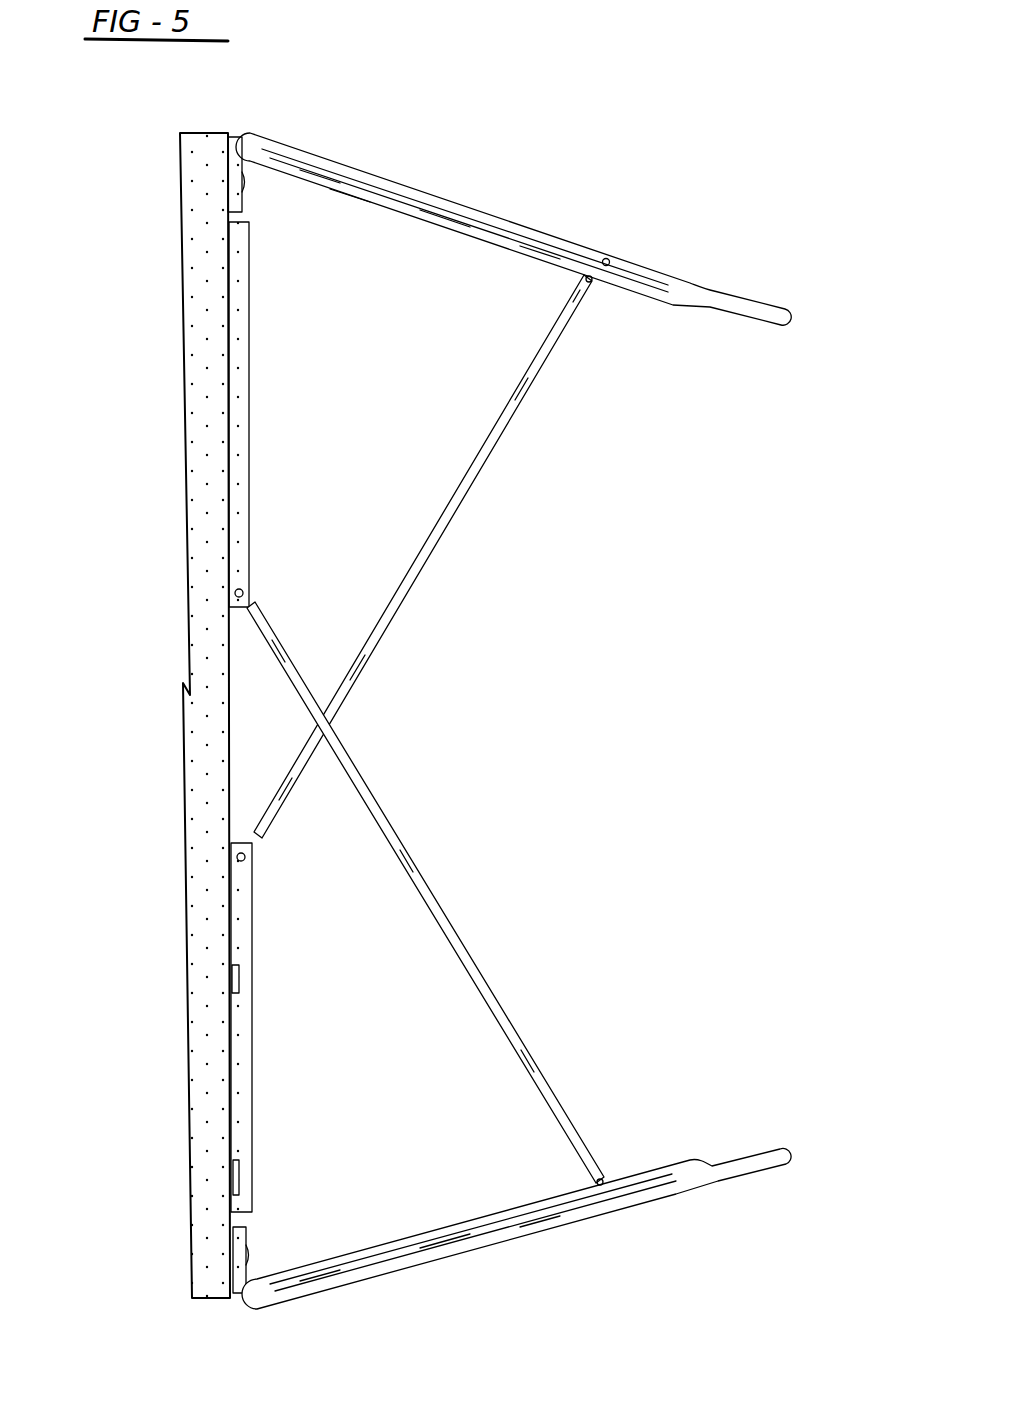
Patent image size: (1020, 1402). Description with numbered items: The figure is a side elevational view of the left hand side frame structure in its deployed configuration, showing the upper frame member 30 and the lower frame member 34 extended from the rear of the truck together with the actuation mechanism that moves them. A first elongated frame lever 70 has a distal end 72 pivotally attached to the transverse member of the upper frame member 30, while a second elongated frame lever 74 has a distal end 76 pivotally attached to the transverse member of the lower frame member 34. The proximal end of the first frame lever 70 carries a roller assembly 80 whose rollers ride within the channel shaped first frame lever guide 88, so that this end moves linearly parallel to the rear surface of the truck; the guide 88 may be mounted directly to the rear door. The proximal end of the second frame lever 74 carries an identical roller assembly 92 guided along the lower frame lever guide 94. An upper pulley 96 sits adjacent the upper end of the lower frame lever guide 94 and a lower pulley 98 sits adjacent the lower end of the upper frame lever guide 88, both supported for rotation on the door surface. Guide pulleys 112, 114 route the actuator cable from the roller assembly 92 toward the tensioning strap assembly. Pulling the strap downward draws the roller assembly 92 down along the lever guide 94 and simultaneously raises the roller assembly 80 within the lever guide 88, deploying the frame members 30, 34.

The upper frame member 30 is at (650, 280).
The lower frame member 34 is at (677, 1196).
The first elongated frame lever 70 is at (465, 495).
The distal end of first frame lever 72 is at (594, 284).
The second elongated frame lever 74 is at (470, 950).
The distal end of second frame lever 76 is at (603, 1180).
The roller assembly 80 is at (247, 858).
The first frame lever guide 88 is at (253, 1085).
The roller assembly 92 is at (245, 592).
The lower frame lever guide 94 is at (251, 425).
The upper pulley 96 is at (244, 198).
The lower pulley 98 is at (242, 1240).
The guide pulley 112 is at (241, 980).
The guide pulley 114 is at (241, 1176).